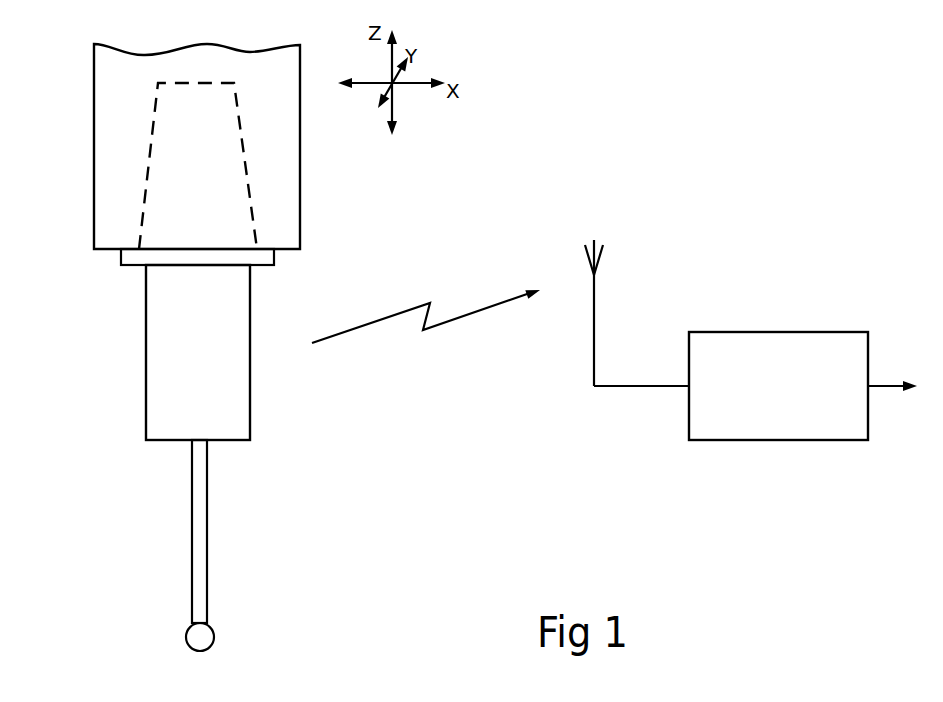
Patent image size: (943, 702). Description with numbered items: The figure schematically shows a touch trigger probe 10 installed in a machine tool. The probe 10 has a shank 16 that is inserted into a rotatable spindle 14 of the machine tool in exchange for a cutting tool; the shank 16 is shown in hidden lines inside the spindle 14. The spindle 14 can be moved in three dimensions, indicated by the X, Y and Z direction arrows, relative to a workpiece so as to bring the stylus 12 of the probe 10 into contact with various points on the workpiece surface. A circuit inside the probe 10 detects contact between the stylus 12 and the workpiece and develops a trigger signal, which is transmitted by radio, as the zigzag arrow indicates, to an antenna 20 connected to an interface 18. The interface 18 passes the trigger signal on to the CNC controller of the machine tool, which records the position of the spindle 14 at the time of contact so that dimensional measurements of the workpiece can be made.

The touch trigger probe 10 is at (146, 373).
The stylus 12 is at (207, 568).
The rotatable spindle 14 is at (301, 207).
The shank 16 is at (150, 140).
The interface 18 is at (747, 332).
The antenna 20 is at (603, 250).